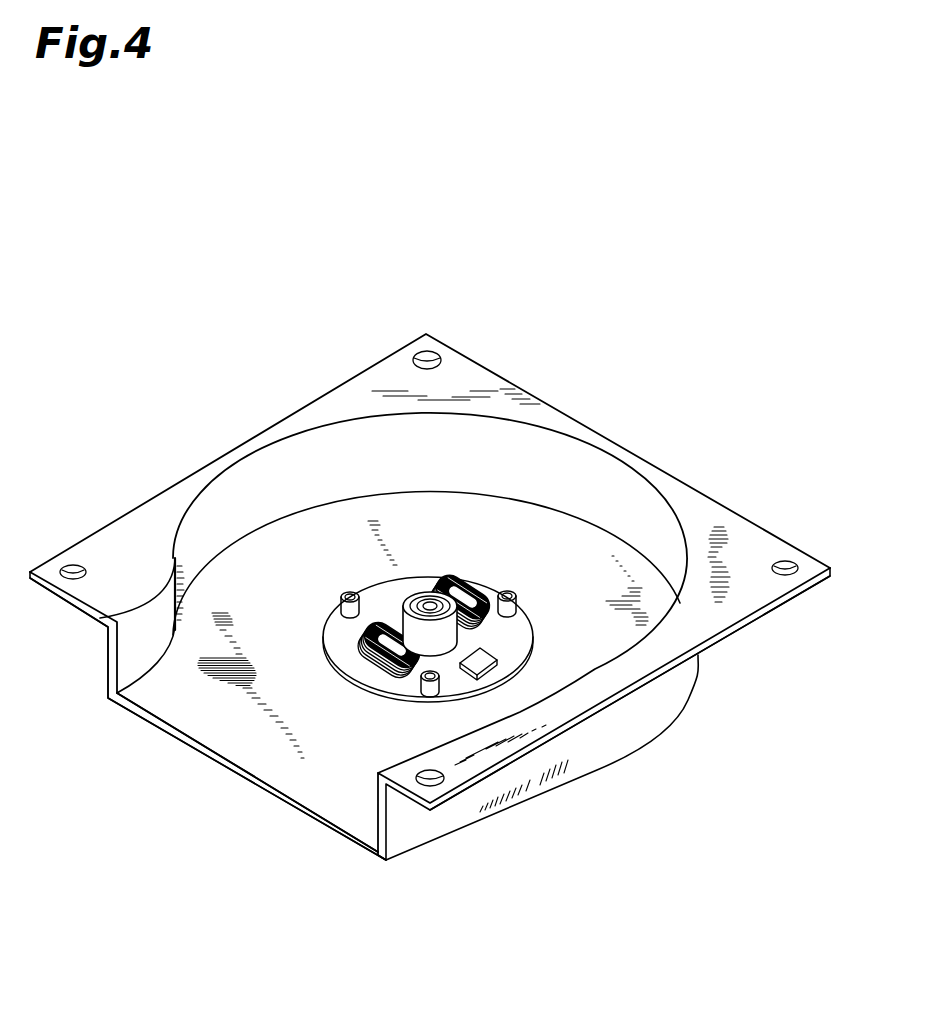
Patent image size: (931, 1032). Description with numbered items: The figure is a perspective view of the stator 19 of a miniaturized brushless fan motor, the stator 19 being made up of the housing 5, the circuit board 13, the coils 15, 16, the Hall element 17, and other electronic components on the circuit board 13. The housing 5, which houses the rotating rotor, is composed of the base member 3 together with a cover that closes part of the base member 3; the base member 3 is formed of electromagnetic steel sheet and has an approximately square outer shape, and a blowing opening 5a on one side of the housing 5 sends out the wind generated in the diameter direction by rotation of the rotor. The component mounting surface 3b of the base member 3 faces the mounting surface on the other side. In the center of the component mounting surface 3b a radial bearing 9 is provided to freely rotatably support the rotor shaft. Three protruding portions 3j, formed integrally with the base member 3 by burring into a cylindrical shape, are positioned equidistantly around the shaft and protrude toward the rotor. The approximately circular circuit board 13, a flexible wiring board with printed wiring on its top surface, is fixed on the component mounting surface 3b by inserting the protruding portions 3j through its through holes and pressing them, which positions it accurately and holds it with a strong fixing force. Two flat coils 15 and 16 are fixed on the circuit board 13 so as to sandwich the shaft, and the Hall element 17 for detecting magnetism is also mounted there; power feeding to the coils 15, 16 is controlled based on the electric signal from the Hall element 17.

The stator 19 is at (430, 567).
The base member 3 is at (700, 520).
The housing 5 is at (700, 520).
The component mounting surface 3b is at (327, 518).
The blowing opening 5a is at (227, 740).
The circuit board 13 is at (512, 632).
The radial bearing 9 is at (428, 600).
The coil 15 is at (474, 586).
The coil 16 is at (362, 650).
The Hall element 17 is at (493, 650).
The protruding portions 3j is at (347, 594).